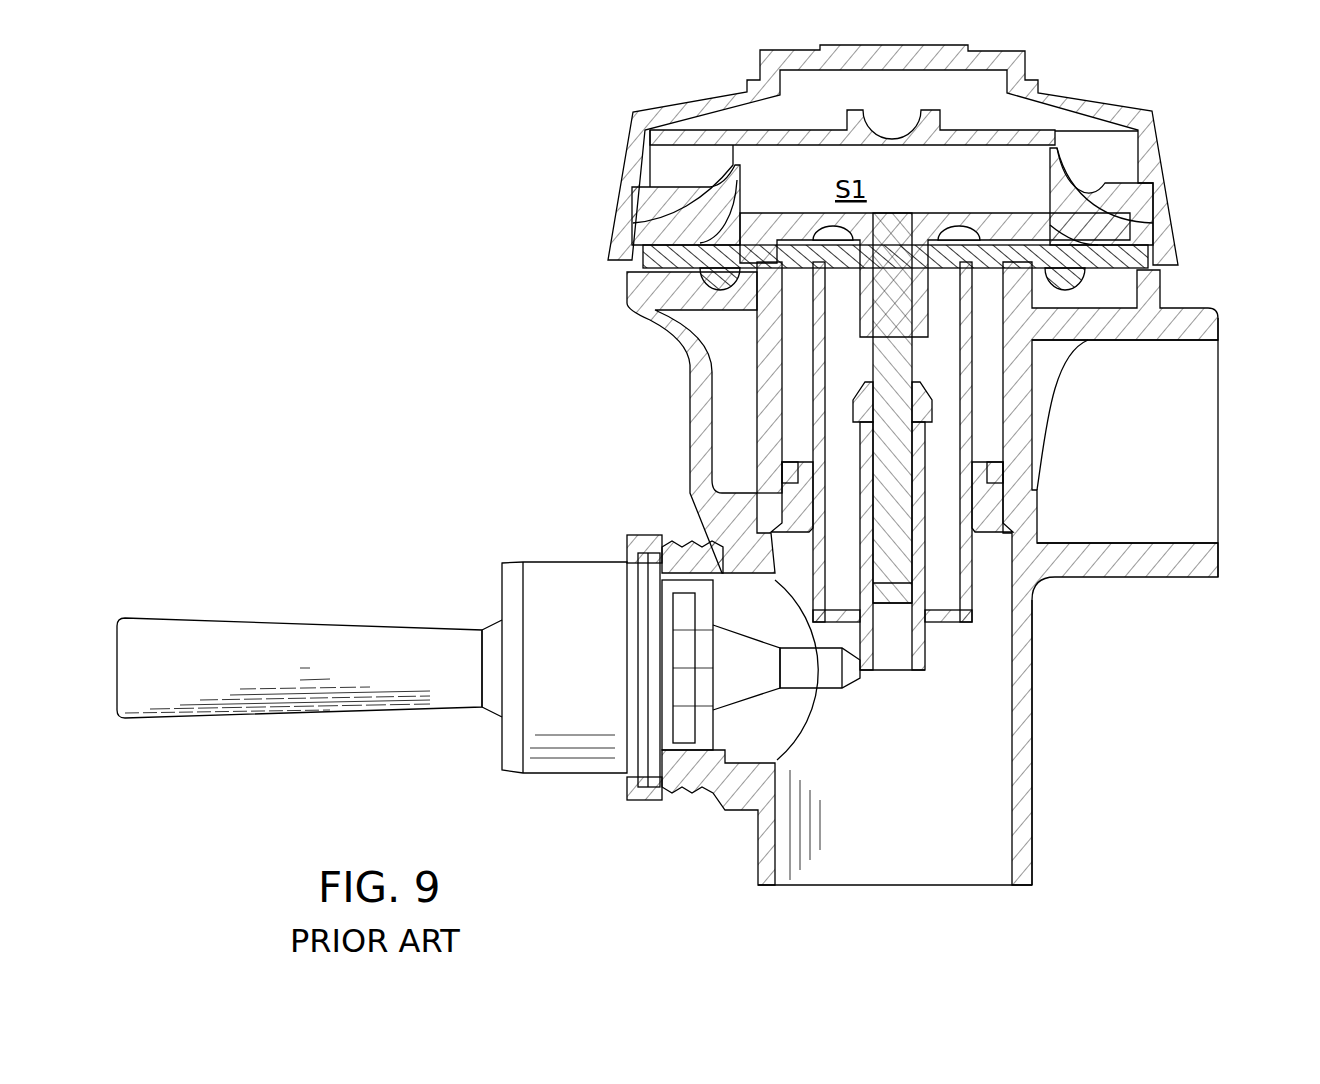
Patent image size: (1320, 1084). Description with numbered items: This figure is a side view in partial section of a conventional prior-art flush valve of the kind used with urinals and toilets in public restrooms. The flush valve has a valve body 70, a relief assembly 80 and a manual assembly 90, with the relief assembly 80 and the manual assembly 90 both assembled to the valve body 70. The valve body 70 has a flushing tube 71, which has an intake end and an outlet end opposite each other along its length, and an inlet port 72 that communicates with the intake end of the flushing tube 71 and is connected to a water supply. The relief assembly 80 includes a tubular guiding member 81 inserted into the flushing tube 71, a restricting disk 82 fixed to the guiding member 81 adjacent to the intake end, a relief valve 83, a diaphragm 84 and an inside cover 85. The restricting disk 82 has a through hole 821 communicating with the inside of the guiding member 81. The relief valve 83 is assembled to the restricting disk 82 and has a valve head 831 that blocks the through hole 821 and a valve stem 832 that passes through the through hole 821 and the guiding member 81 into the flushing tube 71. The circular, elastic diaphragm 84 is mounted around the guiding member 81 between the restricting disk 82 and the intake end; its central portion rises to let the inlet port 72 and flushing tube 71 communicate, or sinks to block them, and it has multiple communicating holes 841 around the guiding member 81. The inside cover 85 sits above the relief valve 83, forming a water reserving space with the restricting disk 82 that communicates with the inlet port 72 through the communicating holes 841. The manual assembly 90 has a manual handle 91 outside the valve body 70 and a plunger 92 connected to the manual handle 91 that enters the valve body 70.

The valve body 70 is at (1040, 800).
The flushing tube 71 is at (1020, 710).
The inlet port 72 is at (1196, 318).
The relief assembly 80 is at (965, 648).
The guiding member 81 is at (966, 598).
The restricting disk 82 is at (755, 200).
The through hole 821 is at (866, 303).
The relief valve 83 is at (918, 206).
The valve head 831 is at (932, 222).
The valve stem 832 is at (921, 667).
The diaphragm 84 is at (672, 290).
The communicating holes 841 is at (1052, 290).
The inside cover 85 is at (1098, 220).
The manual assembly 90 is at (220, 752).
The manual handle 91 is at (250, 643).
The plunger 92 is at (803, 682).